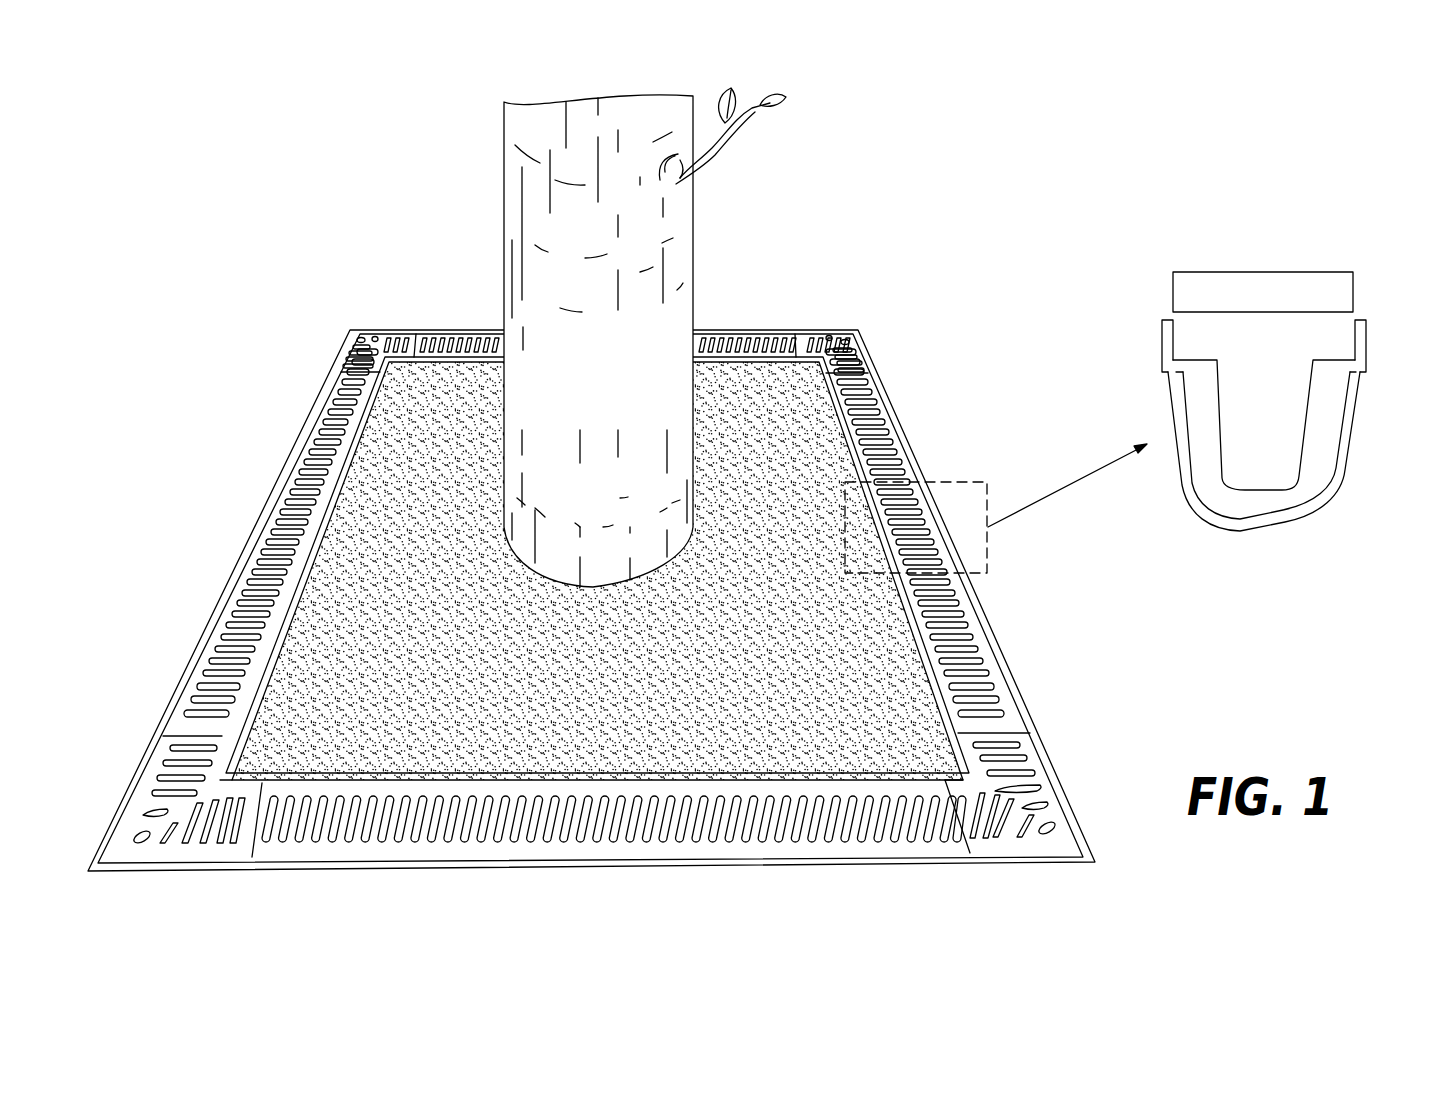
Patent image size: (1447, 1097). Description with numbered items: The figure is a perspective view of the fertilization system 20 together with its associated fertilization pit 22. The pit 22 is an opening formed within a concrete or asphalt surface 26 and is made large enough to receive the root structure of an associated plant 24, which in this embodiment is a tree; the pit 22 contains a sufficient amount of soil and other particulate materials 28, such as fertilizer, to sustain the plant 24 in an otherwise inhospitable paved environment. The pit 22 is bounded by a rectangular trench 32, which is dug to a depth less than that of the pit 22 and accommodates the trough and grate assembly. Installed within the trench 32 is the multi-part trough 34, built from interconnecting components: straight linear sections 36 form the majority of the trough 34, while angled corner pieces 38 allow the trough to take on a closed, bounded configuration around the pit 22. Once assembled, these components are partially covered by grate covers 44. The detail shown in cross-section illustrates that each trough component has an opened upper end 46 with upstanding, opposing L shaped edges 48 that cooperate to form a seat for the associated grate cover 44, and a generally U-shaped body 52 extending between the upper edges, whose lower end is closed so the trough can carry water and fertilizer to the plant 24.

The fertilization system 20 is at (980, 208).
The fertilization pit 22 is at (818, 375).
The plant 24 is at (693, 213).
The concrete or asphalt surface 26 is at (586, 914).
The soil and other particulate materials 28 is at (793, 689).
The trench 32 is at (933, 388).
The multi-part trough 34 is at (980, 638).
The straight linear section 36 is at (847, 850).
The angled corner piece 38 is at (1062, 848).
The grate cover 44 is at (270, 855).
The opened upper end 46 is at (1178, 318).
The L shaped edge 48 is at (1368, 360).
The U-shaped body 52 is at (1333, 442).